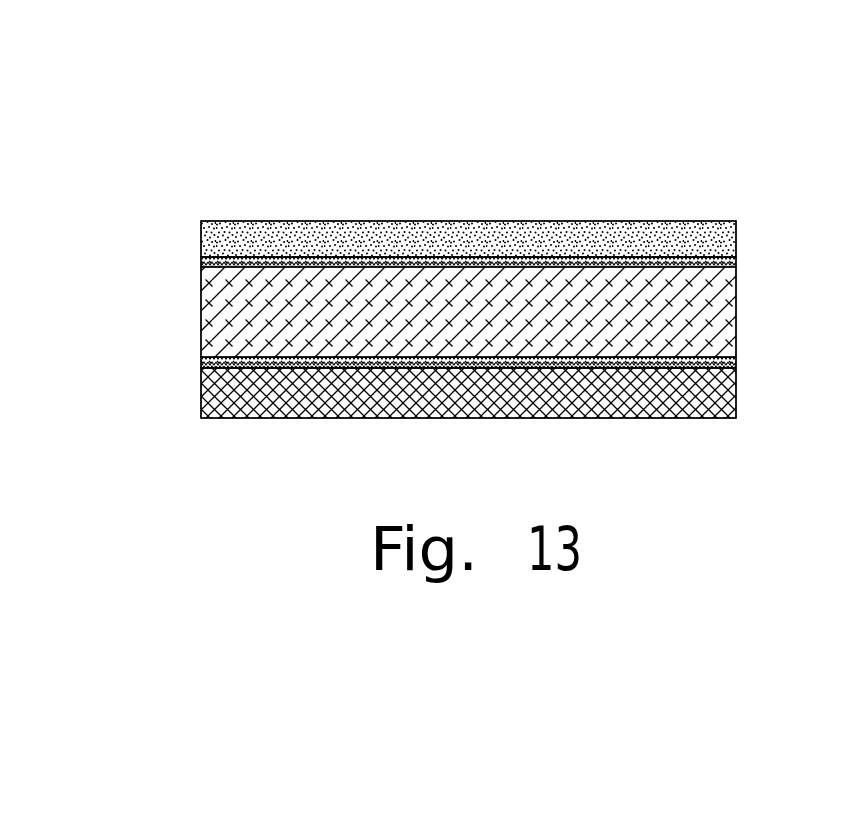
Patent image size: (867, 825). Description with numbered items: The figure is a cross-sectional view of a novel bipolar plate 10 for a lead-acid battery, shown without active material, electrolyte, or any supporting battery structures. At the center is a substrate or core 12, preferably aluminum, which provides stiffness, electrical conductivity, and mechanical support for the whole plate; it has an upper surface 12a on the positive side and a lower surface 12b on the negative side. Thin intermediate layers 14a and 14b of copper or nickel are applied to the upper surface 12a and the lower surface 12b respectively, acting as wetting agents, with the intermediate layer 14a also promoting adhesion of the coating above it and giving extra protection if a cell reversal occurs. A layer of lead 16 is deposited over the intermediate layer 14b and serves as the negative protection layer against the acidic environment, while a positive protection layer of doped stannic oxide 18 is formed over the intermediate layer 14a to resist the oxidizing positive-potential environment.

The bipolar plate 10 is at (428, 107).
The core 12 is at (200, 313).
The upper surface 12a is at (200, 264).
The lower surface 12b is at (200, 360).
The intermediate layer 14a is at (225, 257).
The intermediate layer 14b is at (230, 368).
The lead layer 16 is at (358, 418).
The doped stannic oxide layer 18 is at (385, 221).